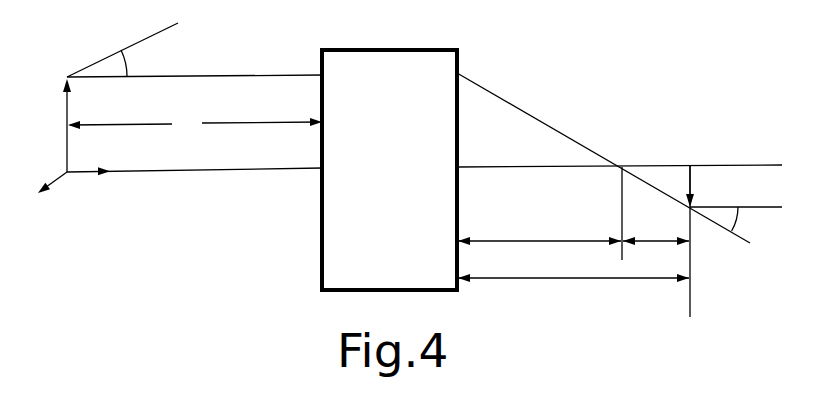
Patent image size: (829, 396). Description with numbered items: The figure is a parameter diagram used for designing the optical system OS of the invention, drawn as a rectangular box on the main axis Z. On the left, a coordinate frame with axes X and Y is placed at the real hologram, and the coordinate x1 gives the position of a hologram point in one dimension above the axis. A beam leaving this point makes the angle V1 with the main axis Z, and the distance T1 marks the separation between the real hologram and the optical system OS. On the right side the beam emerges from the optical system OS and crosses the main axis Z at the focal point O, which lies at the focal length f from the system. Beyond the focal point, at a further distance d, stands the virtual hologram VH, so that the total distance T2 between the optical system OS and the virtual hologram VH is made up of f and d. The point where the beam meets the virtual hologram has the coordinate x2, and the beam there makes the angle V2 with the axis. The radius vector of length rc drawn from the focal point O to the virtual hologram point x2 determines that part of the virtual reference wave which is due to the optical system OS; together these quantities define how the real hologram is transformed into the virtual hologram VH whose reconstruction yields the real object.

The coordinate axis X is at (53, 125).
The coordinate axis Y is at (51, 197).
The main axis Z is at (194, 187).
The real hologram coordinate x1 is at (176, 80).
The beam angle at real hologram V1 is at (122, 50).
The distance between real hologram and optical system T1 is at (195, 123).
The optical system OS is at (389, 170).
The focal point O is at (620, 198).
The virtual hologram VH is at (687, 227).
The radius vector length rc is at (676, 186).
The virtual hologram coordinate x2 is at (718, 215).
The beam angle at virtual hologram V2 is at (611, 158).
The focal length f is at (539, 252).
The distance between focal point and virtual hologram d is at (656, 252).
The distance between optical system and virtual hologram T2 is at (573, 295).